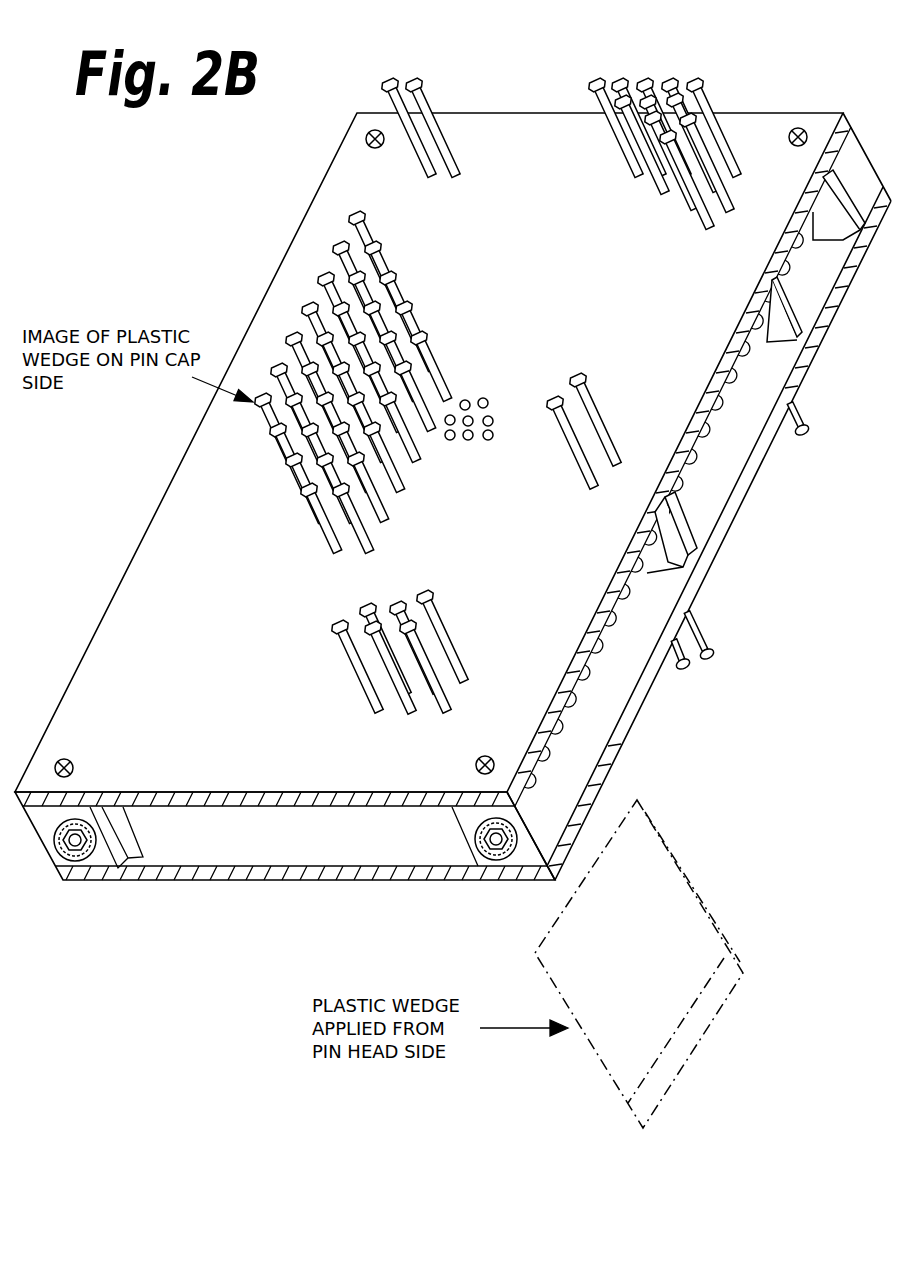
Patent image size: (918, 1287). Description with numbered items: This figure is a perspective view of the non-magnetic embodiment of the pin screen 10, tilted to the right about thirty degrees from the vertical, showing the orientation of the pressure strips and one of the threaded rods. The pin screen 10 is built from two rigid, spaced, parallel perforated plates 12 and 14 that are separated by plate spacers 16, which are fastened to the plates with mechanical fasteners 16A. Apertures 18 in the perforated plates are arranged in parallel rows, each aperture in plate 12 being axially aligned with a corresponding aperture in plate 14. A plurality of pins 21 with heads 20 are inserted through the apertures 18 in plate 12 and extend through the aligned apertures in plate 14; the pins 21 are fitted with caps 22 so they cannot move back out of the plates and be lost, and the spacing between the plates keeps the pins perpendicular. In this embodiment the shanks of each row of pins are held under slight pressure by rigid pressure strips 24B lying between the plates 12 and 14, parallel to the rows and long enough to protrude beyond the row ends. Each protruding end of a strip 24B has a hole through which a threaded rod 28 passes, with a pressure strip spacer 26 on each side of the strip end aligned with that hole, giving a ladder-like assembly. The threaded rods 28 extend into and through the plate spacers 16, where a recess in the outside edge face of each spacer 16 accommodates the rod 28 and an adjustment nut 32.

The pin screen 10 is at (213, 262).
The perforated plate 12 is at (693, 587).
The perforated plate 14 is at (672, 475).
The plate spacer 16 is at (102, 862).
The mechanical fastener 16A is at (467, 763).
The aperture 18 is at (468, 442).
The head 20 is at (808, 425).
The pin 21 is at (275, 508).
The cap 22 is at (418, 83).
The pressure strip 24B is at (802, 313).
The pressure strip spacer 26 is at (673, 530).
The threaded rod 28 is at (587, 670).
The adjustment nut 32 is at (473, 837).